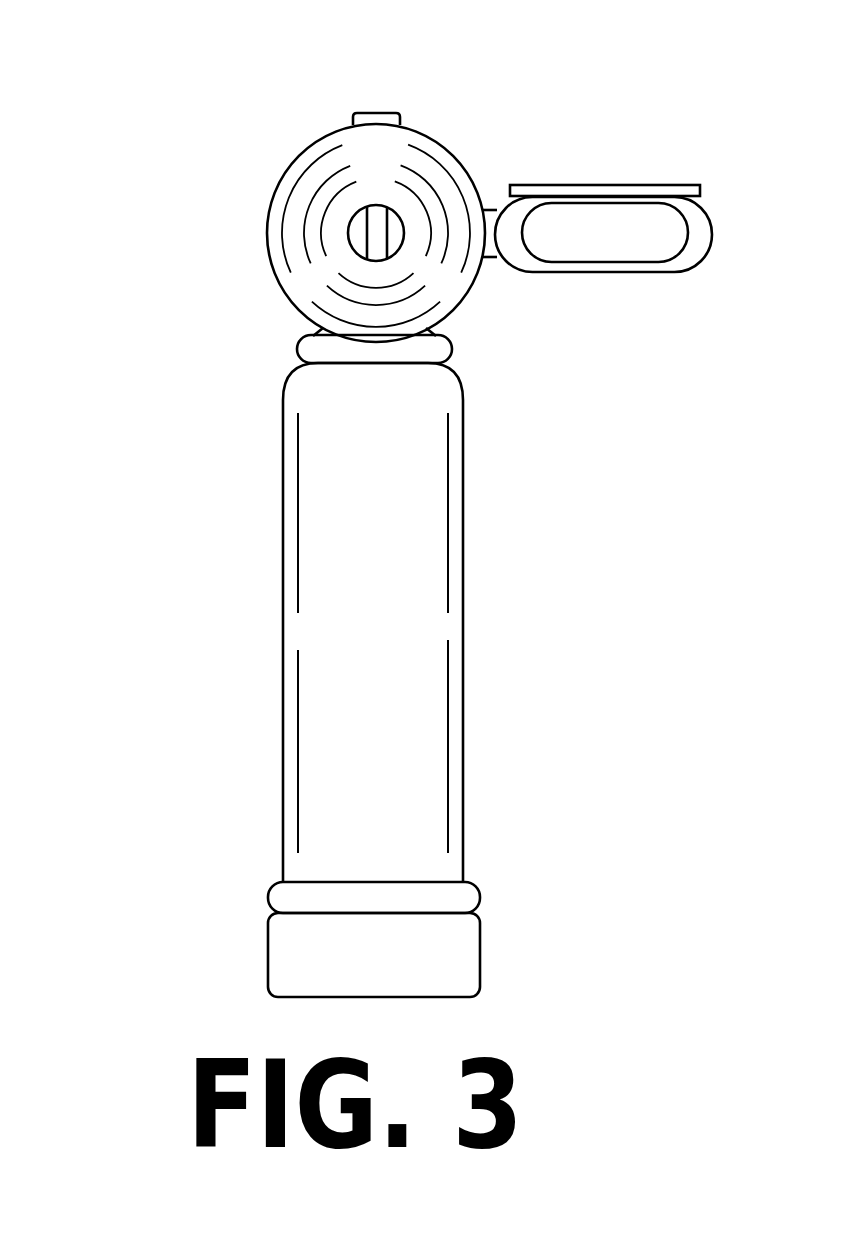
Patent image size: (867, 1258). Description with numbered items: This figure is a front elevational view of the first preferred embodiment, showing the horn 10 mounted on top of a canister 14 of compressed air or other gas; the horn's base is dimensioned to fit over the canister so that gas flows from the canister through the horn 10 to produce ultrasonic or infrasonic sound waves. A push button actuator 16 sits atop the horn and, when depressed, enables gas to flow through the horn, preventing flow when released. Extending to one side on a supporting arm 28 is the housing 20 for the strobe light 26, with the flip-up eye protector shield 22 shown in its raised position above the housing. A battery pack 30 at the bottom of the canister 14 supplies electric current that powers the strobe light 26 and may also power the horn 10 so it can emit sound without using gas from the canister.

The horn 10 is at (267, 233).
The canister 14 is at (282, 623).
The push button actuator 16 is at (373, 113).
The housing 20 is at (715, 233).
The eye protector shield 22 is at (588, 187).
The strobe light 26 is at (602, 262).
The supporting arm 28 is at (493, 260).
The battery pack 30 is at (480, 952).